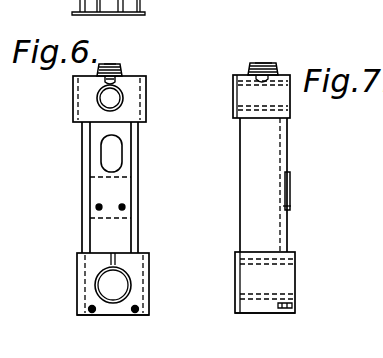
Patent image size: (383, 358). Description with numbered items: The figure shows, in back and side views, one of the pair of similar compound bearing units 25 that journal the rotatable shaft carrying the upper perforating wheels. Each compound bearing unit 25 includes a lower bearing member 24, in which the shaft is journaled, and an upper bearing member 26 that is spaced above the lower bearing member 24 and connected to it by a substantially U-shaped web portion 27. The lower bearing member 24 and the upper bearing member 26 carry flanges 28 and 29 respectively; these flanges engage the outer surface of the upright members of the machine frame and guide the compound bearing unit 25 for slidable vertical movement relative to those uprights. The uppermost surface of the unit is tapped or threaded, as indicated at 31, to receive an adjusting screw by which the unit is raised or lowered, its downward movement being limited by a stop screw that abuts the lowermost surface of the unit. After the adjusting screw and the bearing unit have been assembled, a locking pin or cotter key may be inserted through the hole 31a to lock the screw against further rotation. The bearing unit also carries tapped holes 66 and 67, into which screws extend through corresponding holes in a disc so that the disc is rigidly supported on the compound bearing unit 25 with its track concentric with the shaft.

In FIG. 6, the lower bearing member 24 is at (138, 281).
In FIG. 7, the lower bearing member 24 is at (257, 261).
In FIG. 6, the compound bearing unit 25 is at (155, 163).
In FIG. 7, the compound bearing unit 25 is at (234, 174).
In FIG. 6, the upper bearing member 26 is at (137, 96).
In FIG. 7, the upper bearing member 26 is at (243, 80).
In FIG. 6, the U-shaped web portion 27 is at (135, 147).
In FIG. 7, the U-shaped web portion 27 is at (265, 143).
In FIG. 6, the flange 28 is at (150, 315).
In FIG. 7, the flange 28 is at (238, 308).
In FIG. 6, the flange 29 is at (145, 78).
In FIG. 7, the flange 29 is at (237, 75).
In FIG. 6, the tapped hole 31 is at (112, 69).
In FIG. 7, the tapped hole 31 is at (265, 67).
In FIG. 6, the hole 31a is at (109, 65).
In FIG. 7, the hole 31a is at (288, 56).
In FIG. 6, the tapped hole 66 is at (122, 204).
In FIG. 7, the tapped hole 66 is at (290, 203).
In FIG. 6, the tapped hole 67 is at (133, 311).
In FIG. 7, the tapped hole 67 is at (295, 306).